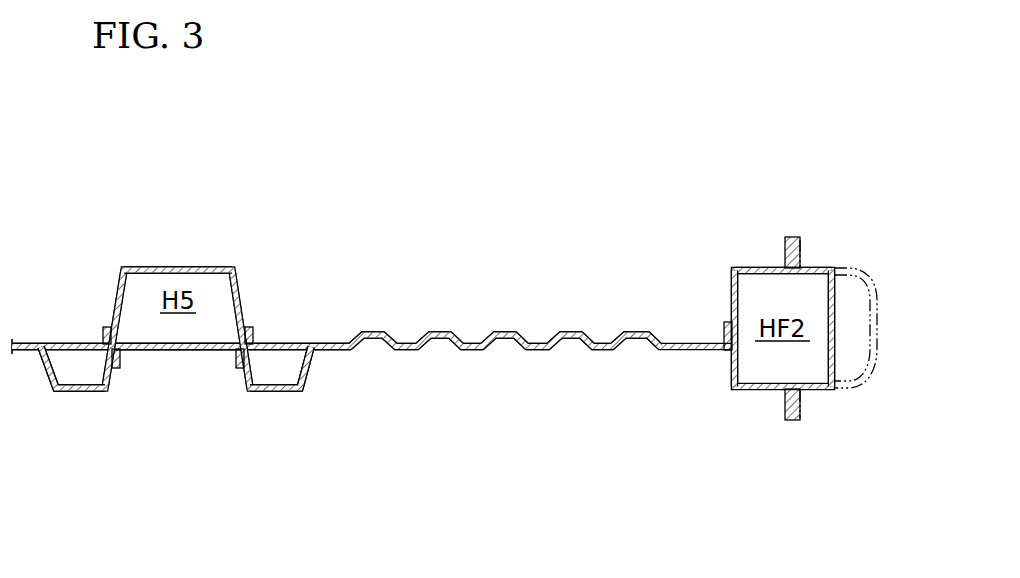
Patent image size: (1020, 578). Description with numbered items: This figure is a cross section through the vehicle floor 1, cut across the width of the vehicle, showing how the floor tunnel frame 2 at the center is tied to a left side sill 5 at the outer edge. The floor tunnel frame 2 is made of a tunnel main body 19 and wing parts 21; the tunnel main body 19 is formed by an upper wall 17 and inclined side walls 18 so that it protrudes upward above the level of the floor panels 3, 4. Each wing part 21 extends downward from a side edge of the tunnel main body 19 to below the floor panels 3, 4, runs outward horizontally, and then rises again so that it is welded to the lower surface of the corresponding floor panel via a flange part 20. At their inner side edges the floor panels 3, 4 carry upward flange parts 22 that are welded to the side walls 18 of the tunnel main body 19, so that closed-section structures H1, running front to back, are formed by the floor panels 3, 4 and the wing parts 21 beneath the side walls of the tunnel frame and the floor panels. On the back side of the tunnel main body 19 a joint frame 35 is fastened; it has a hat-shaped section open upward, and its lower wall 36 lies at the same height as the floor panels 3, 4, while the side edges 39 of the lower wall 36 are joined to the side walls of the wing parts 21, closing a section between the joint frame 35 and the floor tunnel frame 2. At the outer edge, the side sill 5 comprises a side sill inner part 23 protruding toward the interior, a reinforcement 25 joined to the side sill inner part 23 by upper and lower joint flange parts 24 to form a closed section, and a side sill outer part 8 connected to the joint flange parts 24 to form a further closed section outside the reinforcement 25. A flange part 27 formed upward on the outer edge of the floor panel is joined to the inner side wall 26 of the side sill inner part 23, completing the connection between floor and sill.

The floor 1 is at (456, 285).
The floor tunnel frame 2 is at (215, 267).
The floor panel 3 is at (573, 332).
The floor panel 4 is at (50, 343).
The left side sill 5 is at (757, 267).
The side sill outer part 8 is at (856, 268).
The upper wall 17 is at (175, 267).
The inclined side wall 18 is at (113, 300).
The tunnel main body 19 is at (248, 270).
The flange part 20 is at (40, 357).
The wing part 21 is at (83, 392).
The flange part 22 is at (105, 328).
The side sill inner part 23 is at (733, 280).
The joint flange part 24 is at (800, 250).
The reinforcement 25 is at (833, 345).
The inner side wall 26 is at (731, 295).
The flange part 27 is at (722, 325).
The joint frame 35 is at (210, 352).
The lower wall 36 is at (178, 352).
The side edge 39 is at (118, 368).
The closed-section structure H1 is at (72, 375).